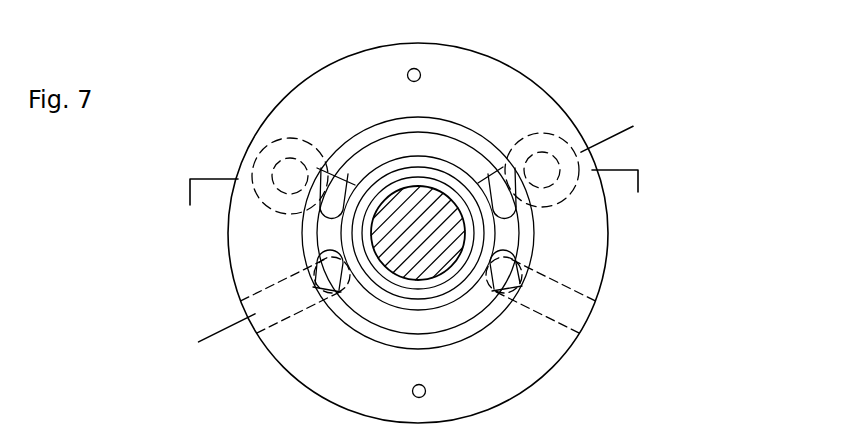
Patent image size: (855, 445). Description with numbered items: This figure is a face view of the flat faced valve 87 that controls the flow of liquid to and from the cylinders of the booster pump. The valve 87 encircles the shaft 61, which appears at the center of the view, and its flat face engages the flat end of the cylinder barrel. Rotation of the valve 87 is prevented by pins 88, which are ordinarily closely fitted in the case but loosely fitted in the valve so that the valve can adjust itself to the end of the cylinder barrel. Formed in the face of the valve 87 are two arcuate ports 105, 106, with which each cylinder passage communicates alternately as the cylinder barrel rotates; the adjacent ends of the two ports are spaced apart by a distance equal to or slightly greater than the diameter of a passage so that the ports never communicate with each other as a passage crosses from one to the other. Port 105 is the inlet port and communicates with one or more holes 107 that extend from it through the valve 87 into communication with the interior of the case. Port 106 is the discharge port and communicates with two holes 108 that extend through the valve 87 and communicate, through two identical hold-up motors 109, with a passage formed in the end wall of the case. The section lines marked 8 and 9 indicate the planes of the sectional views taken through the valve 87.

The flat faced valve 87 is at (397, 50).
The pins 88 is at (421, 79).
The arcuate port 106 is at (425, 117).
The arcuate port 105 is at (418, 334).
The holes 108 is at (452, 141).
The shaft 61 is at (428, 227).
The hold-up motors 109 is at (277, 137).
The holes 107 is at (247, 297).
The section line 8- 8 is at (209, 333).
The section line 9- 9 is at (414, 205).